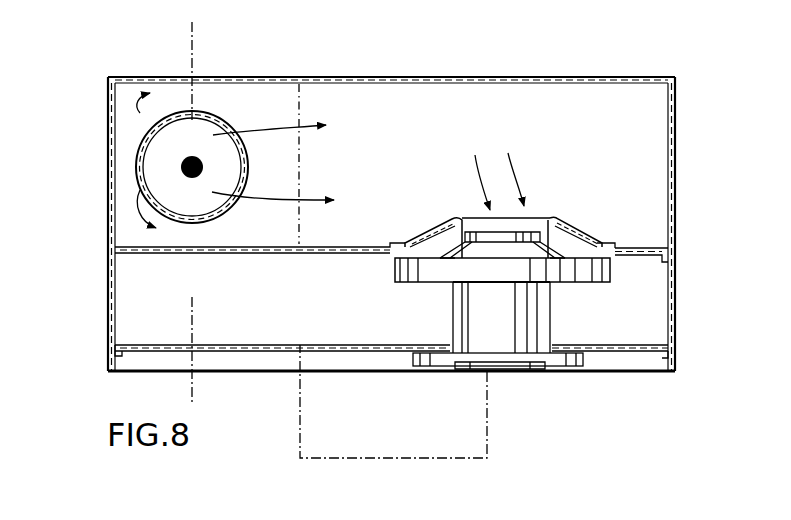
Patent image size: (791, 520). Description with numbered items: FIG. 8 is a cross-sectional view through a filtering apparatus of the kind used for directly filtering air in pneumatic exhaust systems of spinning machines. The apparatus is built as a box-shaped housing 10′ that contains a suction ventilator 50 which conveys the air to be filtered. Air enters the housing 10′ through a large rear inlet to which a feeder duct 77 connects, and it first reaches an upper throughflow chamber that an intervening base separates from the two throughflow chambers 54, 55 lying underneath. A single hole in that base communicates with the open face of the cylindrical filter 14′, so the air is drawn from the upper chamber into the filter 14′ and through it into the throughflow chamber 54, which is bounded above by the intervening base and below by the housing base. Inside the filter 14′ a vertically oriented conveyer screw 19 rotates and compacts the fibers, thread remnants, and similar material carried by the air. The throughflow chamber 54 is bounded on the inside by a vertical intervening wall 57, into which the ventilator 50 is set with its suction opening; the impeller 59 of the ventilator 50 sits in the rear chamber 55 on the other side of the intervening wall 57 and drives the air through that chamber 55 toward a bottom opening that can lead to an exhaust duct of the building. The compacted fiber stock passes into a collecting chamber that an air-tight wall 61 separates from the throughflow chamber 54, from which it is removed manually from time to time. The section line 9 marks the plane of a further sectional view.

The box-shaped housing 10′ is at (365, 194).
The throughflow chamber 54 is at (537, 105).
The rear chamber 55 is at (168, 283).
The vertical intervening wall 57 is at (260, 254).
The air-tight wall 61 is at (299, 178).
The section line 9- 9 is at (192, 33).
The cylindrical filter 14′ is at (235, 127).
The conveyer screw 19 is at (176, 132).
The ventilator 50 is at (446, 250).
The impeller 59 is at (395, 272).
The feeder duct 77 is at (488, 423).